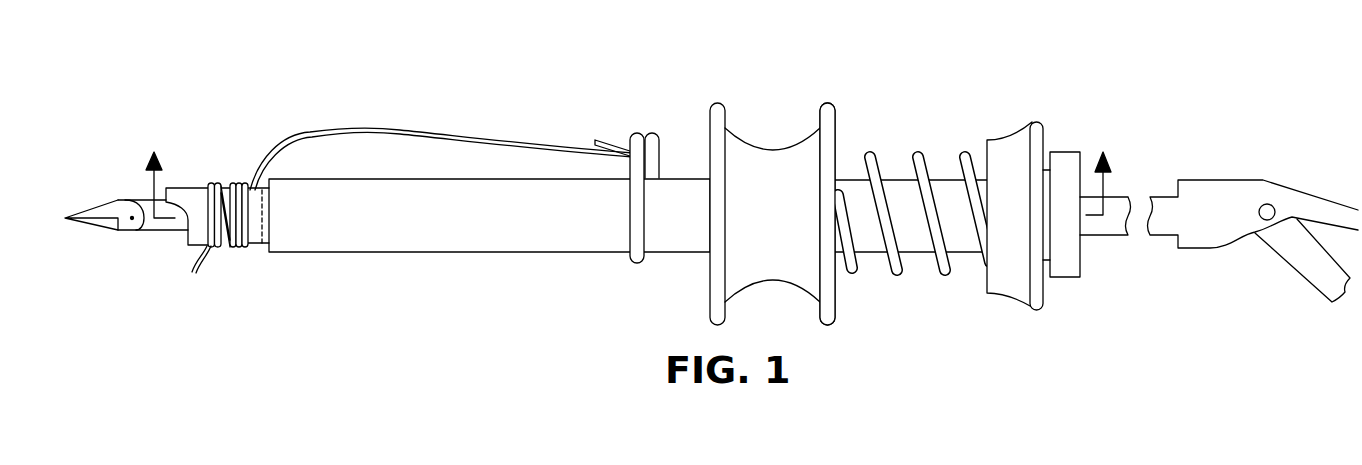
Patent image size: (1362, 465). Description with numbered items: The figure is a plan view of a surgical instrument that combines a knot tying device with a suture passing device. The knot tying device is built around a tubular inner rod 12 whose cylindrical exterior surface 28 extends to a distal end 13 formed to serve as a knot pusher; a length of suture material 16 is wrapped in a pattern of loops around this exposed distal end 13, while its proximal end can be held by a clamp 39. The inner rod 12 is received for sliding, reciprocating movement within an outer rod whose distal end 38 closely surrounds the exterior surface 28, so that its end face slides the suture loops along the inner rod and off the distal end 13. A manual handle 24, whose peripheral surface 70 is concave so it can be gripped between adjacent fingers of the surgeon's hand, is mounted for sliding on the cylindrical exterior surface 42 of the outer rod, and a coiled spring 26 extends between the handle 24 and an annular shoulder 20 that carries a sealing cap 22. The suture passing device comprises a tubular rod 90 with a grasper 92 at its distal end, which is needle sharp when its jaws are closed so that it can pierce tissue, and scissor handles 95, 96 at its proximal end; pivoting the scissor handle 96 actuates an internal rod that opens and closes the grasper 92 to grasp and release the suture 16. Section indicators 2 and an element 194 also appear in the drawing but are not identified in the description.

The grasper 92 is at (100, 205).
The distal end of inner rod 13 is at (137, 200).
The tubular rod 90 is at (147, 233).
The section line 2 is at (628, 172).
The cylindrical exterior surface 28 is at (203, 187).
The inner rod 12 is at (226, 185).
The suture material 16 is at (192, 266).
The joint 194 is at (264, 250).
The distal end of outer rod 38 is at (300, 179).
The cylindrical exterior surface of outer rod 42 is at (380, 179).
The clamp 39 is at (660, 170).
The manual handle 24 is at (800, 98).
The peripheral surface of handle 70 is at (797, 287).
The spring 26 is at (898, 273).
The annular shoulder 20 is at (1031, 122).
The sealing cap 22 is at (1082, 250).
The scissor handle 95 is at (1313, 193).
The scissor handle 96 is at (1290, 268).